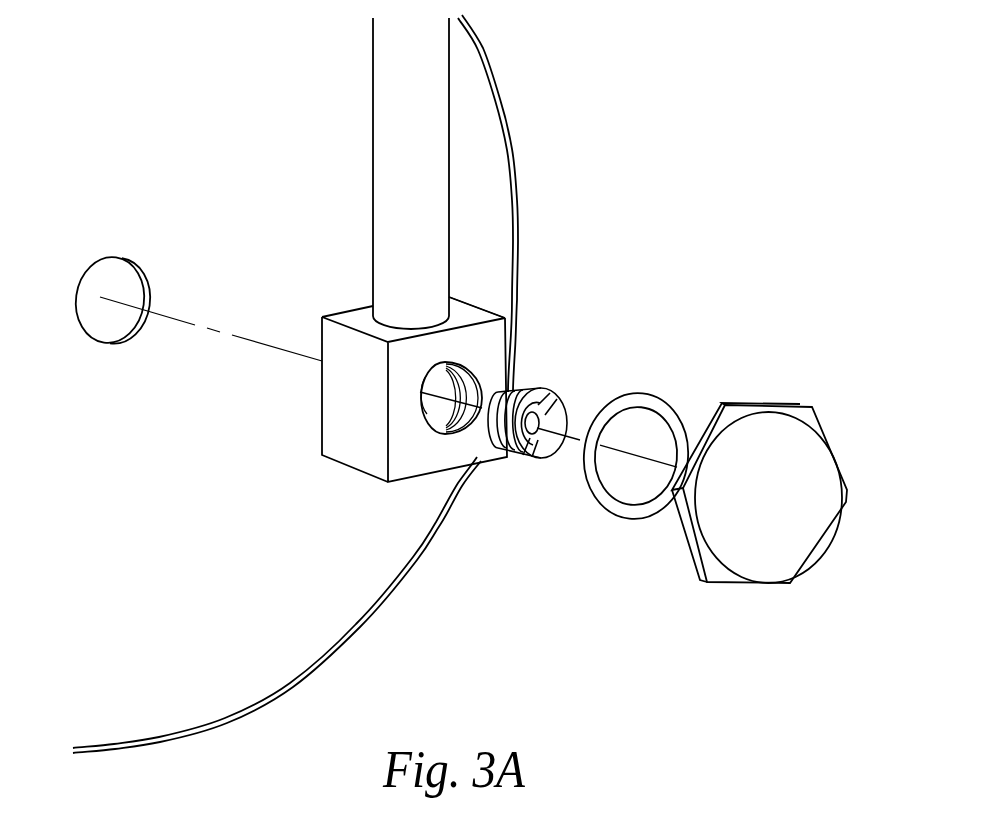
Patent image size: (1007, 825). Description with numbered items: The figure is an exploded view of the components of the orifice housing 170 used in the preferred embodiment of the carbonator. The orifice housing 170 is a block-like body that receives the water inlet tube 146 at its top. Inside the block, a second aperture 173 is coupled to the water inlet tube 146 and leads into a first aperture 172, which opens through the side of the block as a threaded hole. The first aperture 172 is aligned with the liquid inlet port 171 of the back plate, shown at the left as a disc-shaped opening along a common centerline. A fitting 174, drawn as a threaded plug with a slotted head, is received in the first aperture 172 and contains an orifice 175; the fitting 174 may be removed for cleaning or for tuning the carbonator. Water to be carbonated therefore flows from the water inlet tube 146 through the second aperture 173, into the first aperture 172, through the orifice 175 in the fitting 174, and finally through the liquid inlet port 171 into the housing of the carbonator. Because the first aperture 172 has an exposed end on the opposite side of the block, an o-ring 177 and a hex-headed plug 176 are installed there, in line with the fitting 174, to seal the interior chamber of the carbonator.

The water inlet tube 146 is at (390, 167).
The orifice housing 170 is at (405, 472).
The liquid inlet port 171 is at (145, 292).
The first aperture 172 is at (423, 420).
The second aperture 173 is at (460, 317).
The fitting 174 is at (544, 442).
The orifice 175 is at (539, 423).
The plug 176 is at (813, 432).
The o-ring 177 is at (680, 412).